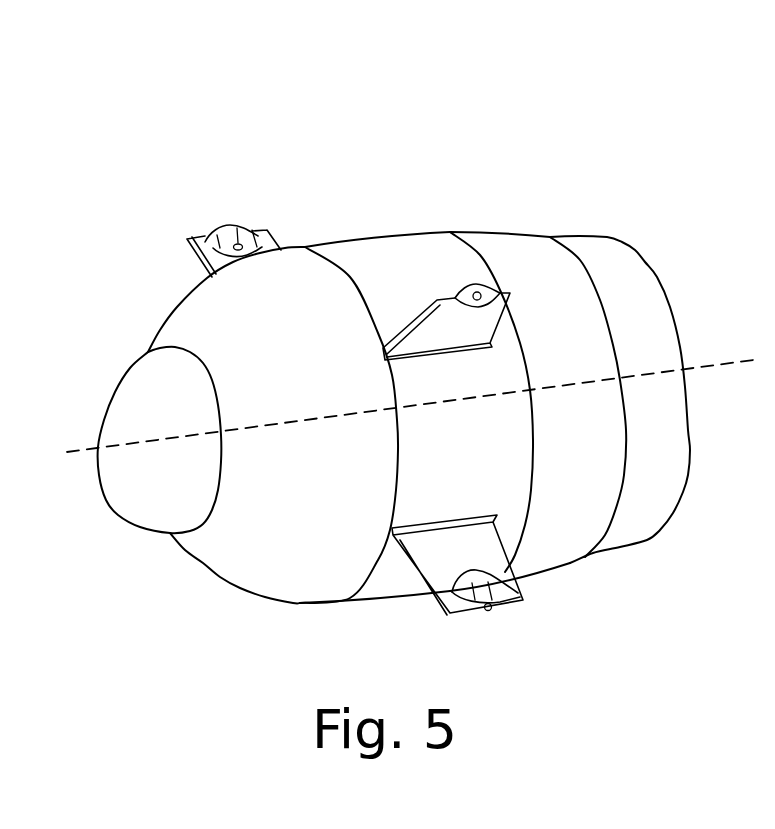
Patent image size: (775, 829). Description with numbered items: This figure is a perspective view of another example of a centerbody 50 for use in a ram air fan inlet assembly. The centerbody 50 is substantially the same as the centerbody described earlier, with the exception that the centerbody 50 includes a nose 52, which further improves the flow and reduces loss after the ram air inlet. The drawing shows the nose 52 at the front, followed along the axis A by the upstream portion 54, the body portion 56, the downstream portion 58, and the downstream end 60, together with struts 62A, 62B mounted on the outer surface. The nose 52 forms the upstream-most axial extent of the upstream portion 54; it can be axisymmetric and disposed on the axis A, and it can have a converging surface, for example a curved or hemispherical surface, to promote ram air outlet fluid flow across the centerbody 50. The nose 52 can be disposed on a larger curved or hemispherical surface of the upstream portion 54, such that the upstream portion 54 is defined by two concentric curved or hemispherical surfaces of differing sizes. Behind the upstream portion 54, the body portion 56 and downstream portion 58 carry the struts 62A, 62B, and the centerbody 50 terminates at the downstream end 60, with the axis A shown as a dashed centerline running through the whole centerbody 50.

The centerbody 50 is at (237, 155).
The nose 52 is at (113, 398).
The upstream portion 54 is at (235, 588).
The body portion 56 is at (305, 240).
The downstream portion 58 is at (492, 230).
The downstream end 60 is at (642, 257).
The strut 62A is at (192, 253).
The struts 62B is at (520, 583).
The axis A is at (737, 360).